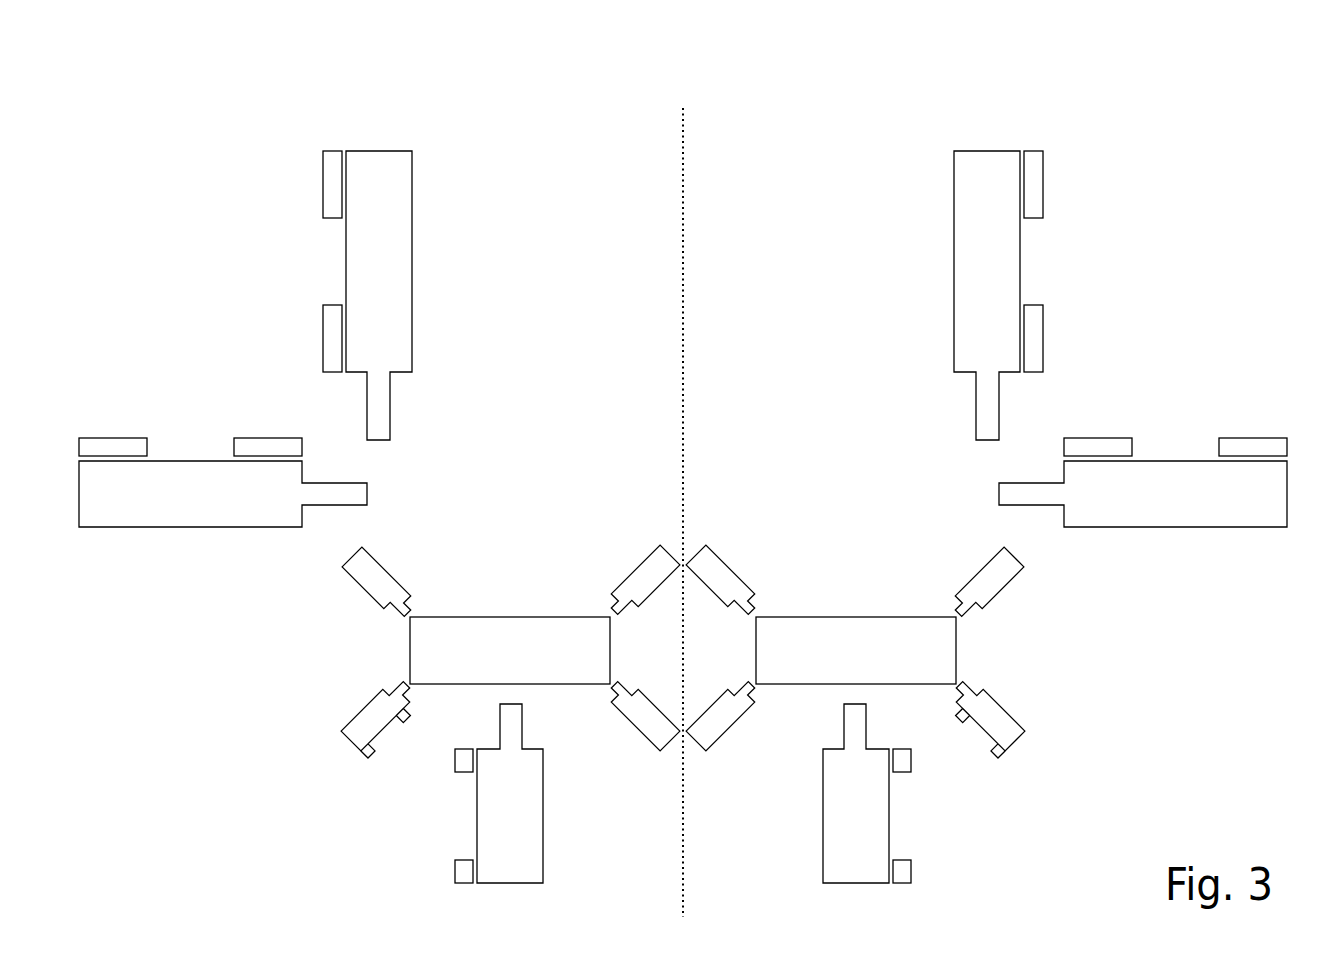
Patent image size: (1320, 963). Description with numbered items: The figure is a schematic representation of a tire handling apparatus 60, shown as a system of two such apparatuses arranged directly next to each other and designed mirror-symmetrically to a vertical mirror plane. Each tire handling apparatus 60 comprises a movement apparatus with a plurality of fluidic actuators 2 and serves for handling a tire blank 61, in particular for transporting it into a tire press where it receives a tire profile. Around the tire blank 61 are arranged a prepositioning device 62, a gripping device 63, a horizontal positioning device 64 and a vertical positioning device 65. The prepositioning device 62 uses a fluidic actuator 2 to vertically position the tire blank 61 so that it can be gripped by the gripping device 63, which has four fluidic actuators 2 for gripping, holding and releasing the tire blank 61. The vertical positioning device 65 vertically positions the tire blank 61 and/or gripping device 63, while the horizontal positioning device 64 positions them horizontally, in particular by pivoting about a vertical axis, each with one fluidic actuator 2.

The tire handling apparatus 60 is at (102, 113).
The tire blank 61 is at (497, 666).
The prepositioning device 62 is at (505, 875).
The gripping device 63 is at (378, 572).
The horizontal positioning device 64 is at (113, 520).
The vertical positioning device 65 is at (402, 267).
The fluidic actuator 2 is at (678, 547).